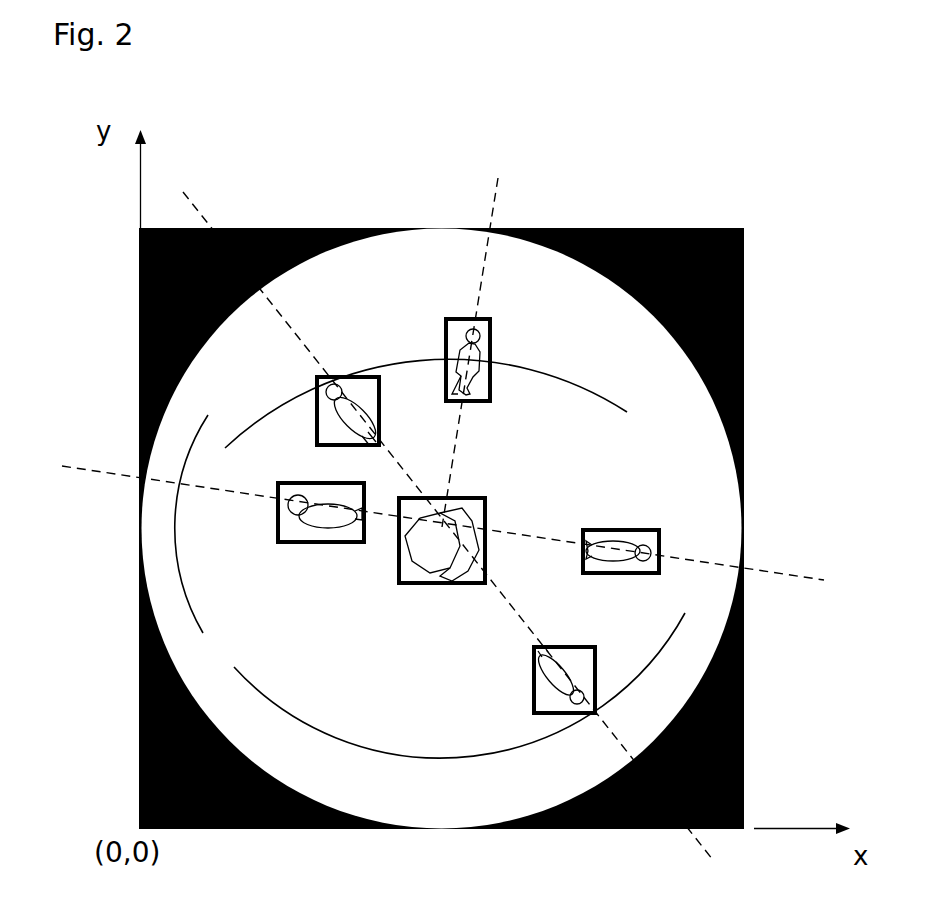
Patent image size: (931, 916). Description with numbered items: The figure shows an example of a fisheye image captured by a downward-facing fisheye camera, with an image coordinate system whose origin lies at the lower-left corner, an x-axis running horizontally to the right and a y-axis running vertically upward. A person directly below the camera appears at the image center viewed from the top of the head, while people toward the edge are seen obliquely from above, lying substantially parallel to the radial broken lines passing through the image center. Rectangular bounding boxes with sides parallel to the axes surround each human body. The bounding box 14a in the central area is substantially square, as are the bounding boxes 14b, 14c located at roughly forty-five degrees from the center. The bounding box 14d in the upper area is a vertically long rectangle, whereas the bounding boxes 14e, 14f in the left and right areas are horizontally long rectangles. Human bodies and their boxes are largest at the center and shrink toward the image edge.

The bounding box 14a is at (423, 583).
The bounding box 14b is at (317, 408).
The bounding box 14c is at (534, 682).
The bounding box 14d is at (446, 342).
The bounding box 14e is at (298, 542).
The bounding box 14f is at (608, 530).